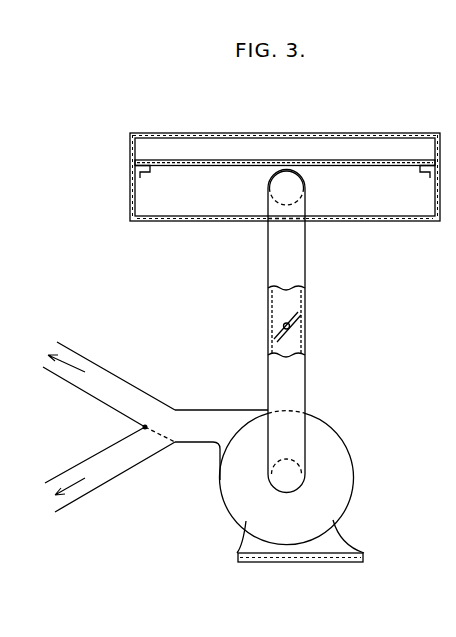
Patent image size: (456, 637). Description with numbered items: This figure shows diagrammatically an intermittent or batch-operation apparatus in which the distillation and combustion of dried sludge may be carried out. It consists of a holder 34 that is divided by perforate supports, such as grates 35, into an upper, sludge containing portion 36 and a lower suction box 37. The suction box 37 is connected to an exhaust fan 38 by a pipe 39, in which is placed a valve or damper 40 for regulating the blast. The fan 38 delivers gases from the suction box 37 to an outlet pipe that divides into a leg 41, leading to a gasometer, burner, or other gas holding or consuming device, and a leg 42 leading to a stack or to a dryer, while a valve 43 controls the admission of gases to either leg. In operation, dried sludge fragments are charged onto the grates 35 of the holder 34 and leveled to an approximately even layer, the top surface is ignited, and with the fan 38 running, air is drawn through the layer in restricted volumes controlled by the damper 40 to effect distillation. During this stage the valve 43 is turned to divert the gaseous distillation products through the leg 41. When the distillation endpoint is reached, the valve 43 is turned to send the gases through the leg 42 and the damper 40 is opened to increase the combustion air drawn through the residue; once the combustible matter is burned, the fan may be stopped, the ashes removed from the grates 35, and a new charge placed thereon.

The holder 34 is at (390, 218).
The grates 35 is at (338, 160).
The upper sludge containing portion 36 is at (190, 142).
The lower suction box 37 is at (205, 207).
The exhaust fan 38 is at (355, 470).
The pipe 39 is at (307, 378).
The valve or damper 40 is at (298, 325).
The leg 41 is at (95, 363).
The leg 42 is at (93, 492).
The valve 43 is at (156, 414).